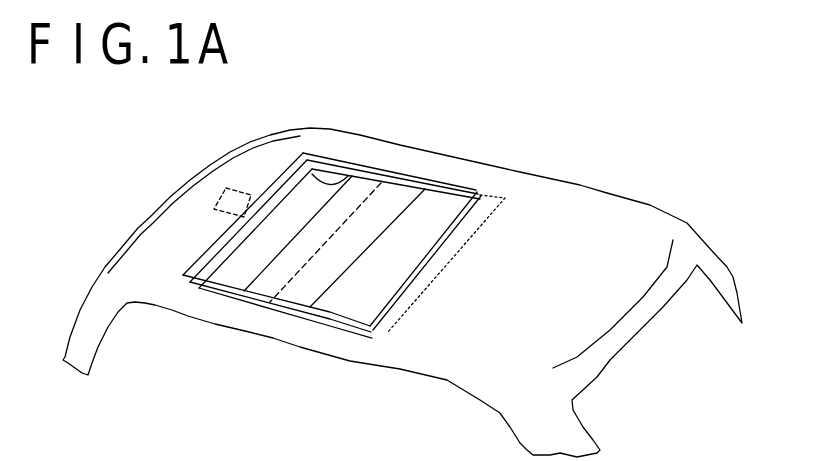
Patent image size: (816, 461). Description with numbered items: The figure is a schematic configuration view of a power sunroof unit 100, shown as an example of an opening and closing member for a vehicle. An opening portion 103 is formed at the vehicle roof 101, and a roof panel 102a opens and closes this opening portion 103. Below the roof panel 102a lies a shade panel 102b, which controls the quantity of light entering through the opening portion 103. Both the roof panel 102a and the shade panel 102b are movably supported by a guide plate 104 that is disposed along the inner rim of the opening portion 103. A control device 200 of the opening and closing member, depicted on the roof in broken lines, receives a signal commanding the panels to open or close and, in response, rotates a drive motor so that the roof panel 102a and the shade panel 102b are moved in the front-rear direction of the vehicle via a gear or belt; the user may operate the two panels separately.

The power sunroof unit 100 is at (318, 117).
The vehicle roof 101 is at (627, 227).
The roof panel 102a is at (303, 300).
The shade panel 102b is at (387, 333).
The opening portion 103 is at (323, 180).
The guide plate 104 is at (222, 303).
The control device 200 is at (226, 190).